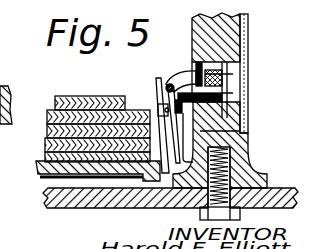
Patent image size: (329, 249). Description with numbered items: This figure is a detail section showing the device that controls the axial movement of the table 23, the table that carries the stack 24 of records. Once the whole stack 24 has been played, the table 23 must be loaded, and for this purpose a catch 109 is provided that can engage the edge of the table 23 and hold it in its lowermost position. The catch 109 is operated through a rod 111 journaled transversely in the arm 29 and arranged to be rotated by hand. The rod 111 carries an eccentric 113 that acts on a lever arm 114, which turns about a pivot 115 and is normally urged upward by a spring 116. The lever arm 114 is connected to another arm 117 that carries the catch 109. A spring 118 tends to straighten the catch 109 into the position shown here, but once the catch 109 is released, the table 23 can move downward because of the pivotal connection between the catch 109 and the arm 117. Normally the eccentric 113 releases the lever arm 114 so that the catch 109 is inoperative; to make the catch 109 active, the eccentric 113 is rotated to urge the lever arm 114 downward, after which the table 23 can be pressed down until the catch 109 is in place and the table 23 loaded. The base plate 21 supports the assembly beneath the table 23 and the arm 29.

The base plate 21 is at (63, 203).
The table 23 is at (38, 163).
The stack 24 is at (62, 96).
The arm 29 is at (242, 28).
The catch 109 is at (150, 128).
The rod 111 is at (207, 82).
The eccentric 113 is at (205, 86).
The lever arm 114 is at (198, 100).
The pivot 115 is at (171, 85).
The spring 116 is at (200, 131).
The arm 117 is at (165, 95).
The spring 118 is at (205, 140).